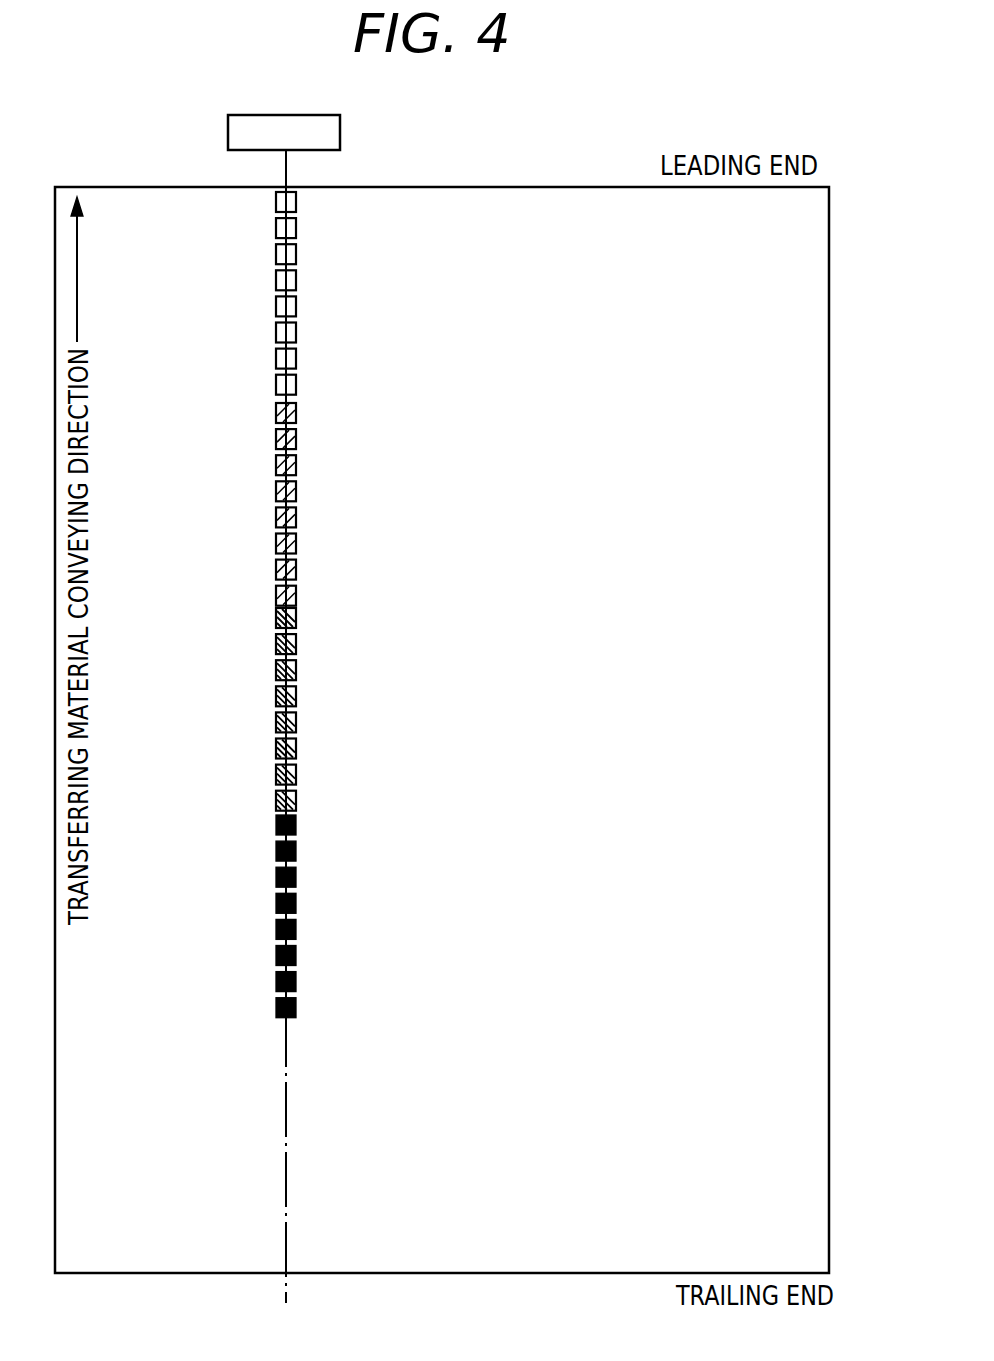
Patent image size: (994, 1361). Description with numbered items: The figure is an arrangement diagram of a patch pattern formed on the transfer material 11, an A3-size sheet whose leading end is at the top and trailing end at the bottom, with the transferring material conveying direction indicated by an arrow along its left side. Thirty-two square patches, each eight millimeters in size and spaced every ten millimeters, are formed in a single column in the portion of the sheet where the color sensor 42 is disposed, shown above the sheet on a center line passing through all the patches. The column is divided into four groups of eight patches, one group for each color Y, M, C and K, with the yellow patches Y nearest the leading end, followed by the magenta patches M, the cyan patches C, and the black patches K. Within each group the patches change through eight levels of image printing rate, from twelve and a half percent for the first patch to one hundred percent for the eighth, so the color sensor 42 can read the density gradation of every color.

The transfer material 11 is at (530, 187).
The color sensor 42 is at (340, 132).
The yellow patches Y is at (307, 193).
The magenta patches M is at (307, 404).
The cyan patches C is at (307, 609).
The black patches K is at (307, 816).